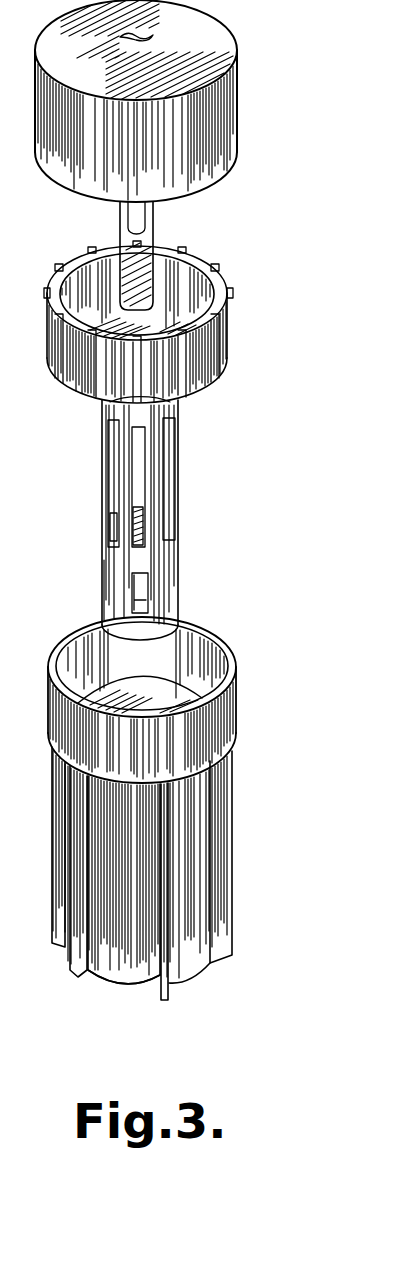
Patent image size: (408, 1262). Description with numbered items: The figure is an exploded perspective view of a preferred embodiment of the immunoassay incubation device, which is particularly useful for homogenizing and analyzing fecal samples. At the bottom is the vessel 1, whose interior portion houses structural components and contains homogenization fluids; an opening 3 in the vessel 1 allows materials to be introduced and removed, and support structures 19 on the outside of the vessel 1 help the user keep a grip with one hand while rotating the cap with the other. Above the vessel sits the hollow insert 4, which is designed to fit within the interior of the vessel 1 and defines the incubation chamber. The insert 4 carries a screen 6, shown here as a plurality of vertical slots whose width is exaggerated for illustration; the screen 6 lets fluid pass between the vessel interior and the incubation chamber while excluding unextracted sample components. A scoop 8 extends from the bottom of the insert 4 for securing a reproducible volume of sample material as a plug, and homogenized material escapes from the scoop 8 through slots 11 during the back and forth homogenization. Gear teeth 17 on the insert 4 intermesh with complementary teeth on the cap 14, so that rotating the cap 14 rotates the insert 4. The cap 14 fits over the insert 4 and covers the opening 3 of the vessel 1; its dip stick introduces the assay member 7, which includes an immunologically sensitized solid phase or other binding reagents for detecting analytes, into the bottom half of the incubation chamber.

The vessel 1 is at (190, 963).
The opening 3 is at (200, 655).
The insert 4 is at (139, 518).
The screen 6 is at (165, 490).
The assay member 7 is at (140, 275).
The scoop 8 is at (118, 607).
The slots 11 is at (138, 592).
The cap 14 is at (222, 133).
The gear teeth 17 is at (205, 392).
The support structures 19 is at (169, 887).